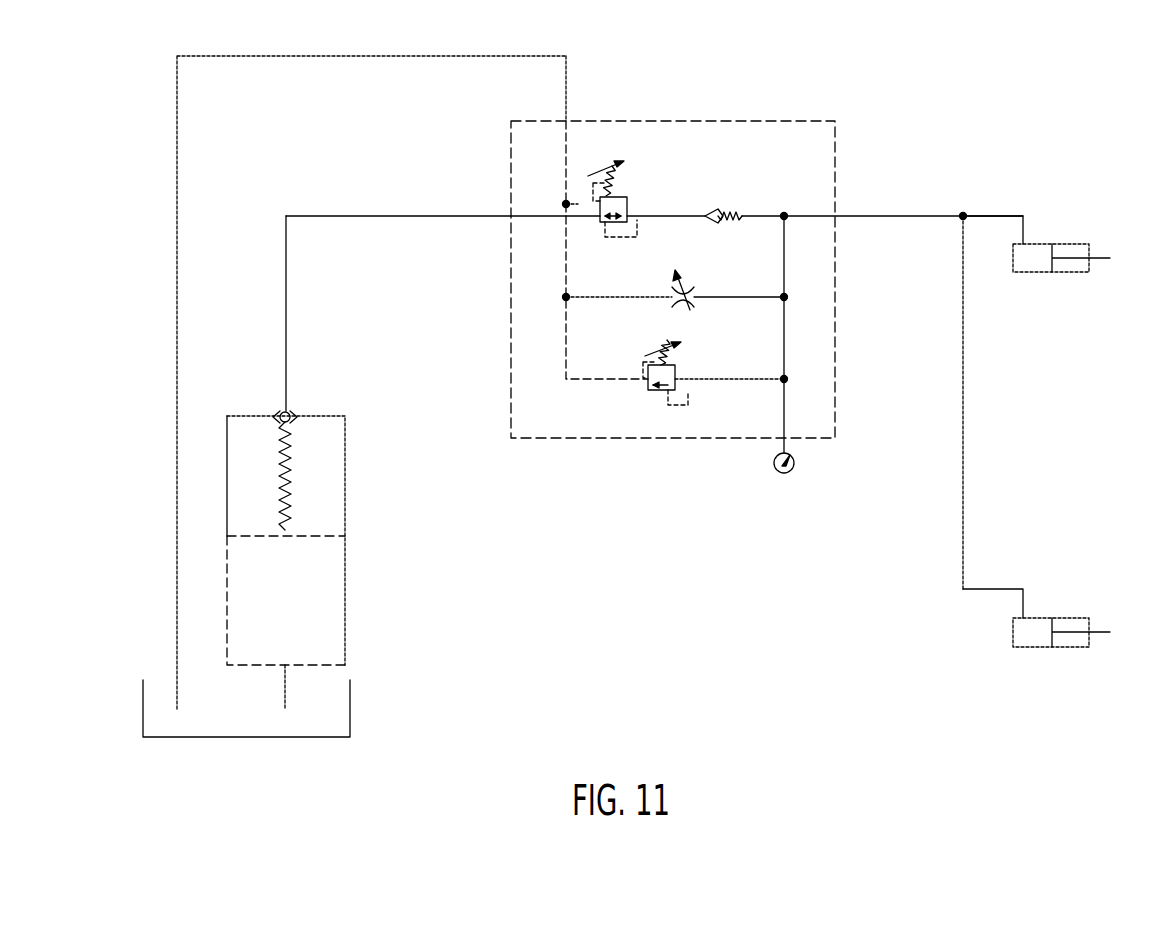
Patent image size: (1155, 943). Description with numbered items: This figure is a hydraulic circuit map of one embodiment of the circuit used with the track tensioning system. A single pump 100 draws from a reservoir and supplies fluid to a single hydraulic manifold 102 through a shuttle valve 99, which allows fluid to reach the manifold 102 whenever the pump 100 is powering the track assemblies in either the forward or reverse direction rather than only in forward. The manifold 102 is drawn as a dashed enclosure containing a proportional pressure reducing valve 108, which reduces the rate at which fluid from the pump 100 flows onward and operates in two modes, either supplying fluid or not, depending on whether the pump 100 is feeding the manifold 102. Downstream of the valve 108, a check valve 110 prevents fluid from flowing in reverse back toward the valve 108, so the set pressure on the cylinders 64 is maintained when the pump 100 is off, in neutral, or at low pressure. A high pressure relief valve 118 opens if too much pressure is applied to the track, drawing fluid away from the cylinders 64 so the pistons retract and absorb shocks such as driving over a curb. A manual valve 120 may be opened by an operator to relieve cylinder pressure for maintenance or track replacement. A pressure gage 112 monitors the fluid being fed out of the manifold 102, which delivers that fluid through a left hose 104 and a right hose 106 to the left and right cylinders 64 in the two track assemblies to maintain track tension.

The cylinder 64 is at (1040, 243).
The shuttle valve 99 is at (290, 408).
The pump 100 is at (345, 622).
The hydraulic manifold 102 is at (552, 440).
The left hose 104 is at (980, 590).
The right hose 106 is at (993, 213).
The proportional pressure reducing valve 108 is at (620, 196).
The check valve 110 is at (735, 210).
The pressure gage 112 is at (791, 472).
The high pressure relief valve 118 is at (651, 392).
The manual valve 120 is at (693, 307).